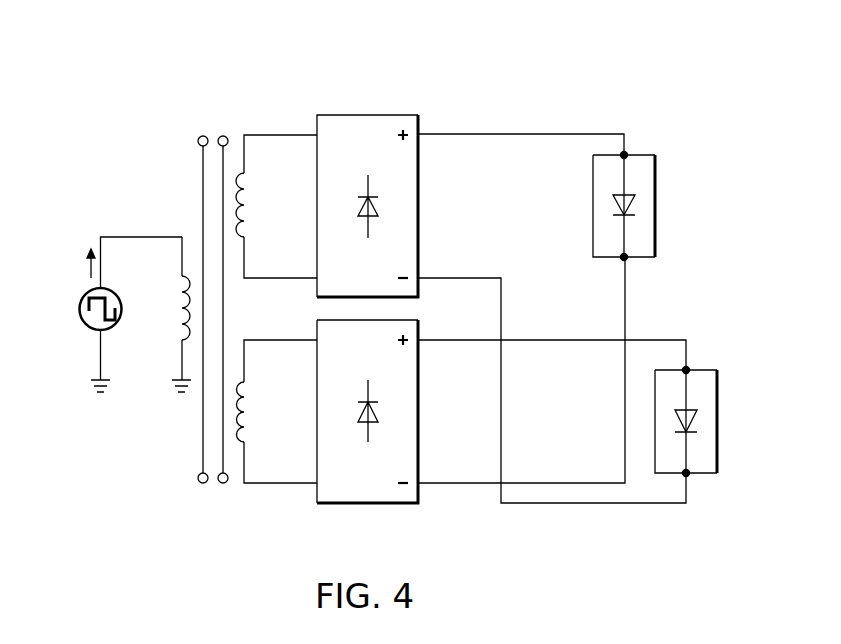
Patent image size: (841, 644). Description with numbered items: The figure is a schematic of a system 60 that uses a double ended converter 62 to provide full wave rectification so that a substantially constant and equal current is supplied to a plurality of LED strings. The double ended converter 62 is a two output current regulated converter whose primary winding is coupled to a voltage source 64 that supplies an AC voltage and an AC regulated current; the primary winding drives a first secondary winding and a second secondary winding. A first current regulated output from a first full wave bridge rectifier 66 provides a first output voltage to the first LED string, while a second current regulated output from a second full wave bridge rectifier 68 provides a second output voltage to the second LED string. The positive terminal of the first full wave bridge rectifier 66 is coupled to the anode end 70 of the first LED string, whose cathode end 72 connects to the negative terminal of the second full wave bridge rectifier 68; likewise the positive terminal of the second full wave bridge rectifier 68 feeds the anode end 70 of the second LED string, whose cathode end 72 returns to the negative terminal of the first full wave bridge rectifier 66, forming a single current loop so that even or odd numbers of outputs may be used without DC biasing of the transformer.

The system 60 is at (607, 88).
The double ended converter 62 is at (111, 173).
The voltage source 64 is at (60, 286).
The first full wave bridge rectifier 66 is at (368, 114).
The second full wave bridge rectifier 68 is at (368, 506).
The anode end 70 is at (630, 152).
The cathode end 72 is at (628, 262).